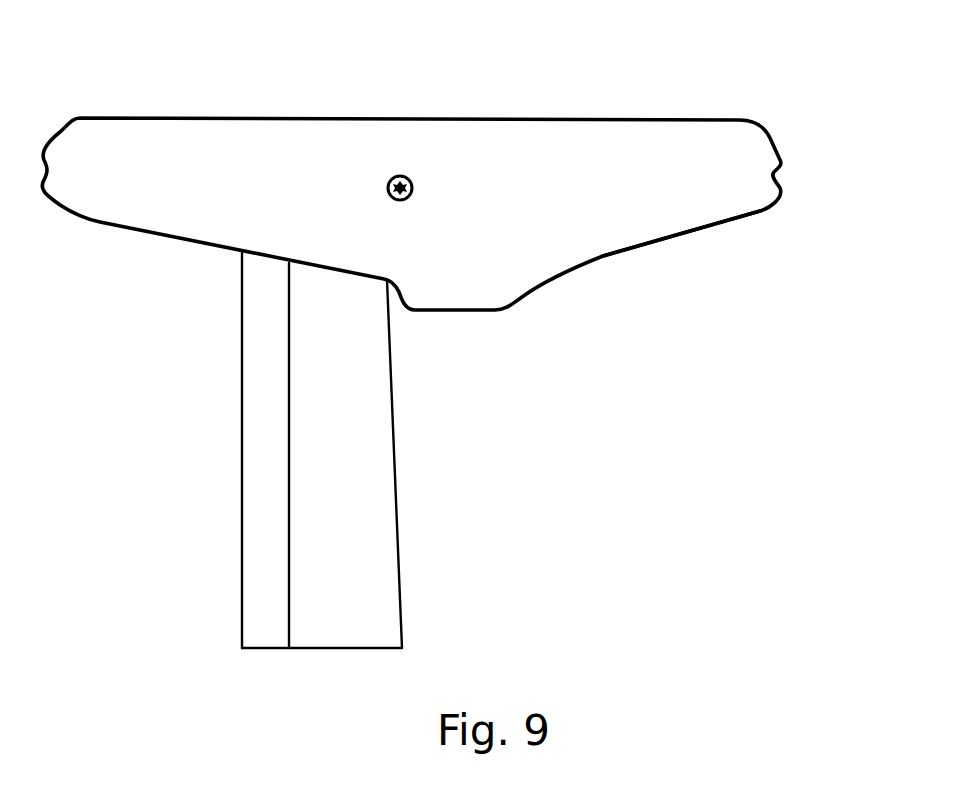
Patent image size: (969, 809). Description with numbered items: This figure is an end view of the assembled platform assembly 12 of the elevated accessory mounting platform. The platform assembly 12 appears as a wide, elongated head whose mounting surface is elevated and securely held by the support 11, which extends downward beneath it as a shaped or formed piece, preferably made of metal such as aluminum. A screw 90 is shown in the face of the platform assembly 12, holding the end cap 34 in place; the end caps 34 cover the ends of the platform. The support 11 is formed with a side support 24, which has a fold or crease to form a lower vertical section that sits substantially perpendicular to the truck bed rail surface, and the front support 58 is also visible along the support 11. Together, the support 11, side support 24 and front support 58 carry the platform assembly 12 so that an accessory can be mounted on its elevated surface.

The platform assembly 12 is at (637, 72).
The screw 90 is at (412, 186).
The end cap 34 is at (603, 257).
The support 11 is at (353, 450).
The front support 58 is at (240, 407).
The side support 24 is at (380, 460).